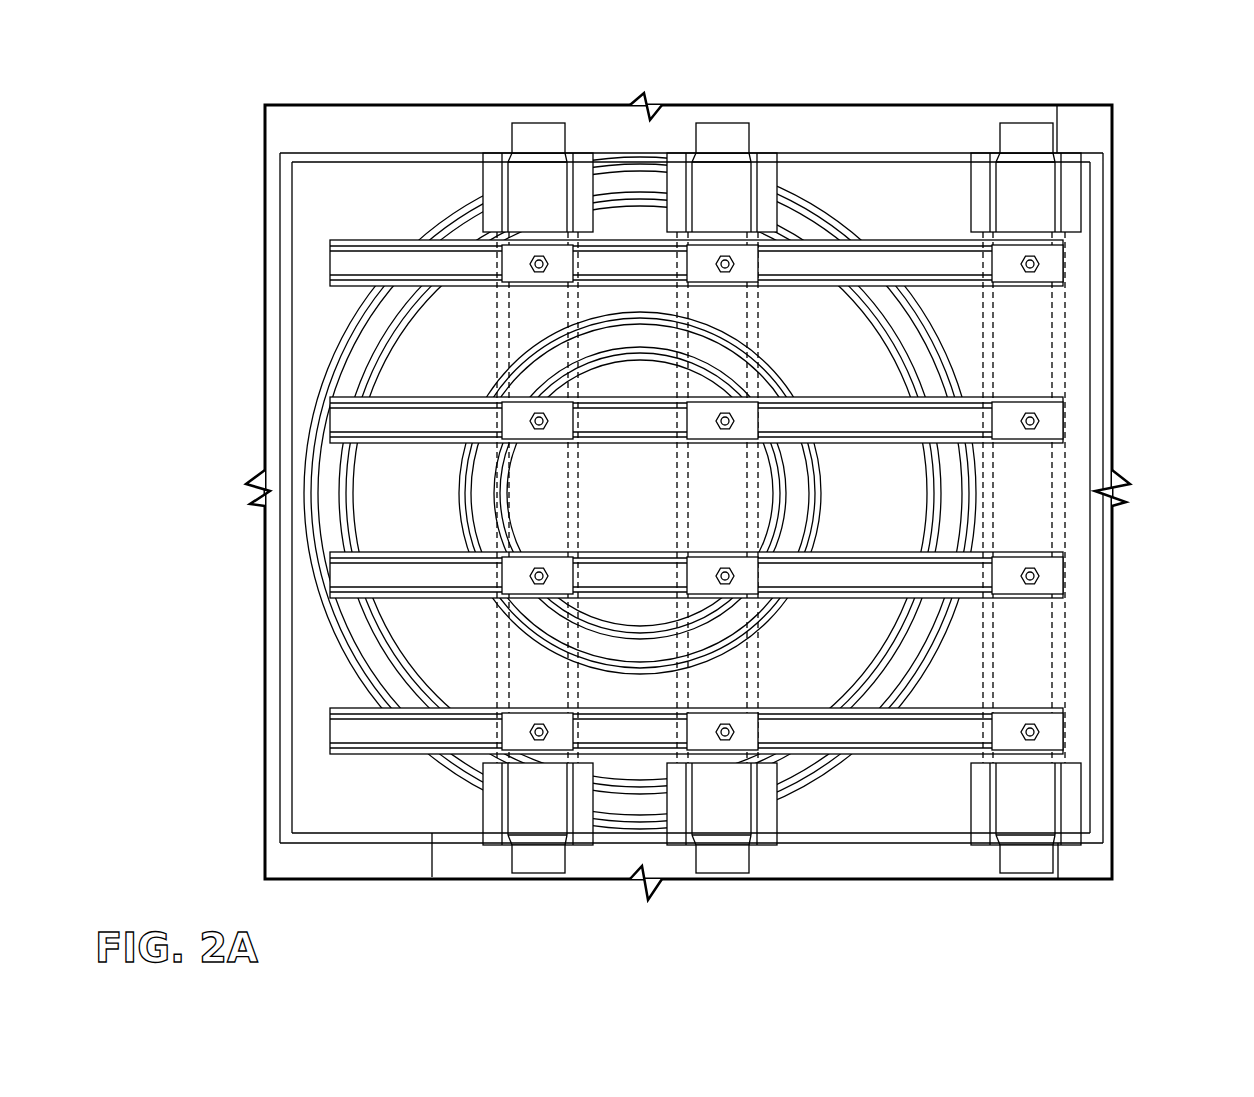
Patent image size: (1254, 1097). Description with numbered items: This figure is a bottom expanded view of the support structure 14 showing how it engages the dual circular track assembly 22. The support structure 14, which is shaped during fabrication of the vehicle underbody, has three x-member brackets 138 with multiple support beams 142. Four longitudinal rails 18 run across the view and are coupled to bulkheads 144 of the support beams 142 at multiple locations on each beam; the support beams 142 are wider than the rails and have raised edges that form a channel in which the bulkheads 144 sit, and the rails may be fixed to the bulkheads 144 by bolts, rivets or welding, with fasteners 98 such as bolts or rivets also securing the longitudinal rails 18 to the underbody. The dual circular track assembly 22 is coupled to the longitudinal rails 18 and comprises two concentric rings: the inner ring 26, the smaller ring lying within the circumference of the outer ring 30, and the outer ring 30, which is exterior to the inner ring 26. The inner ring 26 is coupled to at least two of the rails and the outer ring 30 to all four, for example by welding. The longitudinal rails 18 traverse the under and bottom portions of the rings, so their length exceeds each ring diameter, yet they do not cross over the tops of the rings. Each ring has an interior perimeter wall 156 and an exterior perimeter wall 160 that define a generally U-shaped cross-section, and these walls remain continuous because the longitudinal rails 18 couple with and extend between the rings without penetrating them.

The support structure 14 is at (1180, 137).
The longitudinal rails 18 is at (877, 425).
The dual circular track assembly 22 is at (350, 720).
The inner ring 26 is at (847, 500).
The outer ring 30 is at (365, 302).
The fasteners 98 is at (530, 268).
The x-member brackets 138 is at (536, 175).
The support beams 142 is at (530, 660).
The bulkheads 144 is at (518, 257).
The interior perimeter wall 156 is at (405, 313).
The exterior perimeter wall 160 is at (410, 257).